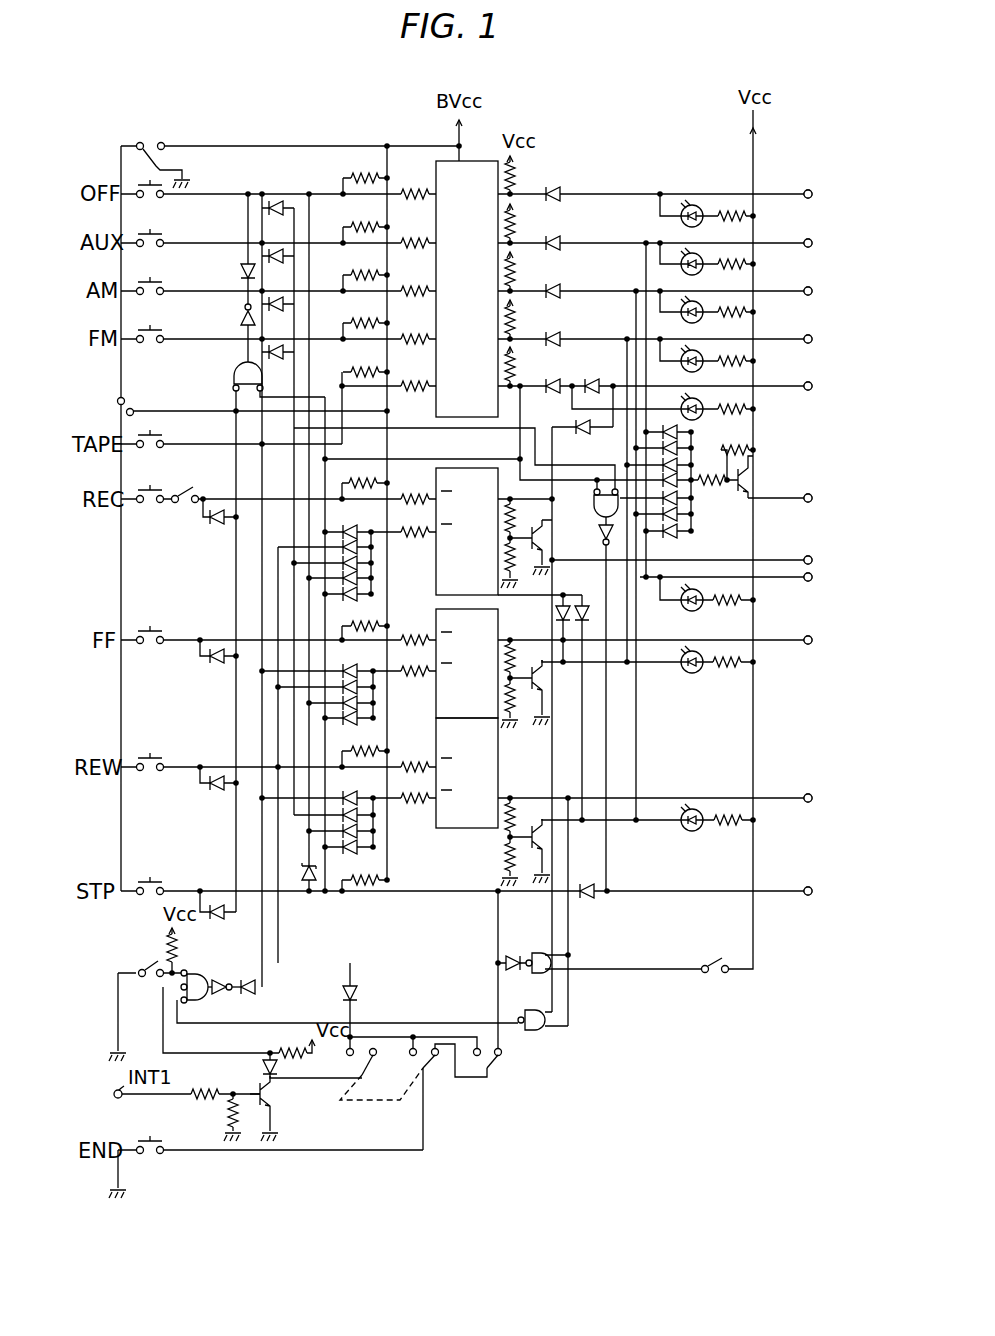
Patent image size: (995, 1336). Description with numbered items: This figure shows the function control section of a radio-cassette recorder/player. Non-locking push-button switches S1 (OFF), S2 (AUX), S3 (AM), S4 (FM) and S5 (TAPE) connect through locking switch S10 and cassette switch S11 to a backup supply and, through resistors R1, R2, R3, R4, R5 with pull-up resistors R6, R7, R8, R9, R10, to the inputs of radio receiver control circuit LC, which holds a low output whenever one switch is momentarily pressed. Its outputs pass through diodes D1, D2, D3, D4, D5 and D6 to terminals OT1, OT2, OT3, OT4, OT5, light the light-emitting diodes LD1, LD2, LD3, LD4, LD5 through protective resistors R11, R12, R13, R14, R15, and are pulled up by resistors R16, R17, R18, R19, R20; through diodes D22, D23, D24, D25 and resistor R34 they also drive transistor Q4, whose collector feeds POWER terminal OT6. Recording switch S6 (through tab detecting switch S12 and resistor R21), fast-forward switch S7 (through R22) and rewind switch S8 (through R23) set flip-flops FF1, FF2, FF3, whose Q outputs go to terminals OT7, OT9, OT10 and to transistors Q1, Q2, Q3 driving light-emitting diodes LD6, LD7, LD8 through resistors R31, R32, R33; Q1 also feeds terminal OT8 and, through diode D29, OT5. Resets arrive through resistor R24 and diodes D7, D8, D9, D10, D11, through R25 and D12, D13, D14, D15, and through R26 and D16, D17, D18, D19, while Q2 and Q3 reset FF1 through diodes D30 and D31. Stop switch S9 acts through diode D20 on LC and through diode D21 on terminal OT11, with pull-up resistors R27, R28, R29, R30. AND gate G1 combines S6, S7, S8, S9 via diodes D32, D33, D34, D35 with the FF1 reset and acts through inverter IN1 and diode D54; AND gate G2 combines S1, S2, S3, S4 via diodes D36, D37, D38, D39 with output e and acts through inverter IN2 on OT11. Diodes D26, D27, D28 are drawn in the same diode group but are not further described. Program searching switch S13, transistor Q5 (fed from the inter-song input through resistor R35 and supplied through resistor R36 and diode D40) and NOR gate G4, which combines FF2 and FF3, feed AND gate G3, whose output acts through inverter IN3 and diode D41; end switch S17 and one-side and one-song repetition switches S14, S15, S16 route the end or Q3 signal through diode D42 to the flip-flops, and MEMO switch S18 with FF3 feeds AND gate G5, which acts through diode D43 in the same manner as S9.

The logic circuit LC is at (478, 159).
The flip-flop FF1 is at (467, 531).
The flip-flop FF2 is at (467, 663).
The flip-flop FF3 is at (467, 773).
The OFF switch S1 is at (150, 202).
The AUX switch S2 is at (150, 251).
The AM switch S3 is at (150, 299).
The FM switch S4 is at (150, 347).
The TAPE switch S5 is at (150, 452).
The REC switch S6 is at (150, 508).
The FF switch S7 is at (151, 649).
The REW switch S8 is at (150, 775).
The STP switch S9 is at (150, 899).
The switch S10 is at (157, 147).
The switch S11 is at (145, 402).
The switch S12 is at (195, 488).
The switch S13 is at (145, 962).
The switch S14 is at (507, 1068).
The switch S15 is at (352, 1064).
The switch S16 is at (407, 1068).
The END switch S17 is at (155, 1158).
The switch S18 is at (714, 976).
The resistor R1 is at (415, 182).
The resistor R2 is at (415, 231).
The resistor R3 is at (415, 279).
The resistor R4 is at (415, 327).
The resistor R5 is at (415, 374).
The resistor R6 is at (365, 172).
The resistor R7 is at (365, 221).
The resistor R8 is at (365, 269).
The resistor R9 is at (365, 317).
The resistor R10 is at (365, 360).
The resistor R11 is at (726, 212).
The resistor R12 is at (738, 264).
The resistor R13 is at (738, 312).
The resistor R14 is at (738, 361).
The resistor R15 is at (744, 409).
The resistor R16 is at (530, 173).
The resistor R17 is at (530, 221).
The resistor R18 is at (530, 269).
The resistor R19 is at (530, 317).
The resistor R20 is at (530, 364).
The resistor R21 is at (420, 487).
The resistor R22 is at (420, 628).
The resistor R23 is at (420, 755).
The resistor R24 is at (420, 520).
The resistor R25 is at (420, 659).
The resistor R26 is at (420, 786).
The resistor R27 is at (364, 480).
The resistor R28 is at (368, 624).
The resistor R29 is at (368, 749).
The resistor R30 is at (365, 884).
The resistor R31 is at (732, 612).
The resistor R32 is at (732, 674).
The resistor R33 is at (732, 832).
The resistor R34 is at (726, 470).
The resistor R35 is at (206, 1082).
The resistor R36 is at (290, 1040).
The diode D1 is at (559, 180).
The diode D2 is at (548, 238).
The diode D3 is at (548, 286).
The diode D4 is at (548, 334).
The diode D5 is at (544, 382).
The diode D6 is at (601, 372).
The diode D7 is at (357, 521).
The diode D8 is at (340, 550).
The diode D9 is at (362, 565).
The diode D10 is at (362, 580).
The diode D11 is at (362, 596).
The diode D12 is at (368, 670).
The diode D13 is at (362, 688).
The diode D14 is at (362, 704).
The diode D15 is at (362, 719).
The diode D16 is at (368, 796).
The diode D17 is at (362, 816).
The diode D18 is at (362, 832).
The diode D19 is at (362, 848).
The zener diode D20 is at (304, 878).
The diode D21 is at (595, 903).
The diode D22 is at (715, 422).
The diode D23 is at (710, 446).
The diode D24 is at (660, 460).
The diode D25 is at (684, 486).
The diode D26 is at (684, 505).
The diode D27 is at (678, 520).
The diode D28 is at (666, 534).
The diode D29 is at (576, 437).
The diode D30 is at (558, 612).
The diode D31 is at (590, 618).
The diode D32 is at (215, 527).
The diode D33 is at (209, 667).
The diode D34 is at (216, 793).
The diode D35 is at (225, 924).
The diode D36 is at (269, 218).
The diode D37 is at (275, 266).
The diode D38 is at (275, 314).
The diode D39 is at (283, 363).
The diode D40 is at (289, 1068).
The diode D41 is at (250, 992).
The diode D42 is at (370, 993).
The diode D43 is at (521, 951).
The diode D54 is at (241, 268).
The light emitting diode LD1 is at (680, 222).
The light emitting diode LD2 is at (680, 268).
The light emitting diode LD3 is at (680, 316).
The light emitting diode LD4 is at (686, 367).
The light emitting diode LD5 is at (680, 408).
The light emitting diode LD6 is at (682, 610).
The light emitting diode LD7 is at (684, 670).
The light emitting diode LD8 is at (682, 829).
The transistor Q1 is at (538, 560).
The transistor Q2 is at (542, 680).
The transistor Q3 is at (544, 841).
The transistor Q4 is at (746, 498).
The transistor Q5 is at (272, 1094).
The gate G1 is at (234, 368).
The gate G2 is at (594, 502).
The gate G3 is at (197, 974).
The gate G4 is at (533, 1031).
The gate G5 is at (536, 974).
The inverter IN1 is at (241, 318).
The inverter IN2 is at (600, 532).
The inverter IN3 is at (221, 998).
The output terminal (MIC/OFF) OT1 is at (823, 182).
The output terminal (AUX) OT2 is at (846, 214).
The output terminal (AM) OT3 is at (838, 262).
The output terminal (FM) OT4 is at (836, 310).
The output terminal (TAPE) OT5 is at (856, 358).
The output terminal (POWER) OT6 is at (817, 487).
The output terminal (REC) OT7 is at (804, 549).
The output terminal (REC) OT8 is at (840, 580).
The output terminal (FF) OT9 is at (795, 628).
The output terminal (REW) OT10 is at (812, 786).
The output terminal (STP) OT11 is at (858, 865).